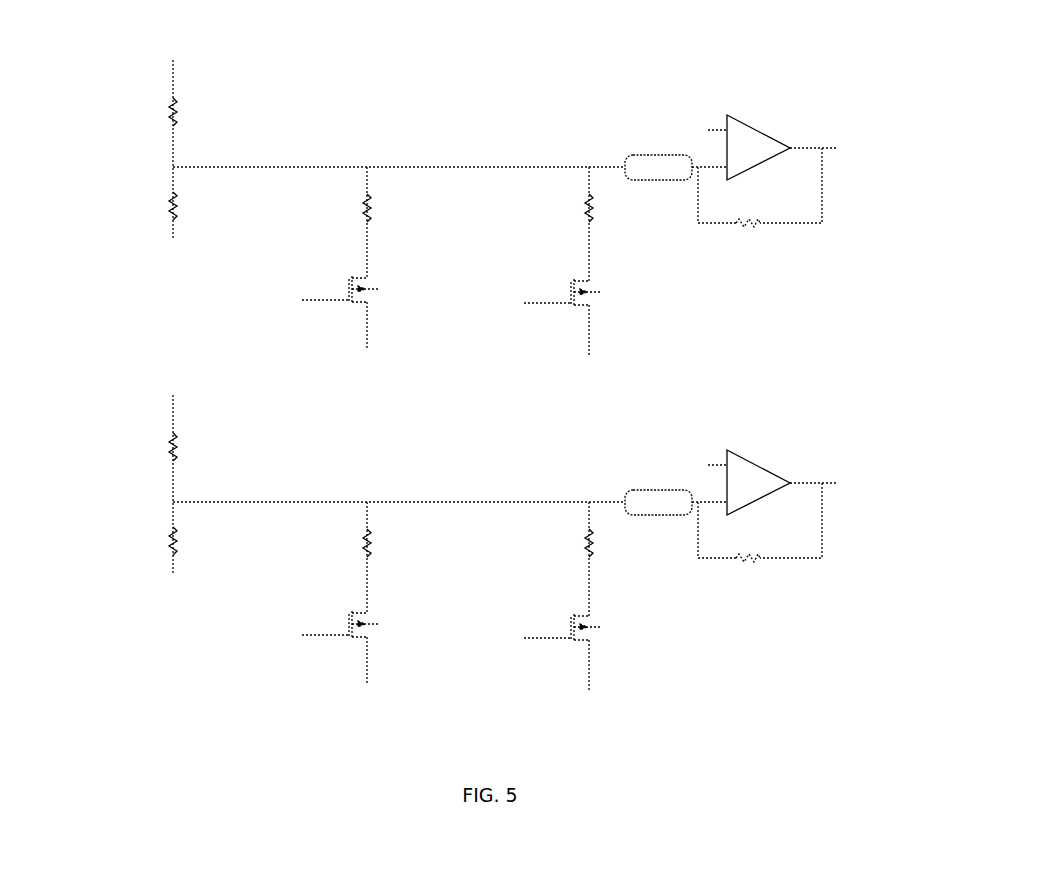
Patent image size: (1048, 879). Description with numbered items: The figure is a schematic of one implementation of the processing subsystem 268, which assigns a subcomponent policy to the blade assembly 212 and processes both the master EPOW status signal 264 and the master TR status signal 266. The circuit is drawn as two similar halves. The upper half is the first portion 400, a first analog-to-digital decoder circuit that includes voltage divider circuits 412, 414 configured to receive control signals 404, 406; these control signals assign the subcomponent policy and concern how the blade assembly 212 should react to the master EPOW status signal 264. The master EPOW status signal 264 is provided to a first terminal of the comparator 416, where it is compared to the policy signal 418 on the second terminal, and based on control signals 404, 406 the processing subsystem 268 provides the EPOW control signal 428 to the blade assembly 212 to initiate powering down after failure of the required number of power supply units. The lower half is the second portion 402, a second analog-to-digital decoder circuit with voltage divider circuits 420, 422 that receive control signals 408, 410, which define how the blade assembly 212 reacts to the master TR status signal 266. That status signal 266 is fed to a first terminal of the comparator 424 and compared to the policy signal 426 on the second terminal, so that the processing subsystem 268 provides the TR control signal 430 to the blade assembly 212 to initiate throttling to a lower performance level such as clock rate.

The first portion of processing subsystem 400 is at (118, 55).
The second portion of processing subsystem 402 is at (118, 397).
The processing subsystem 268 is at (521, 41).
The master EPOW status signal 264 is at (588, 131).
The master TR status signal 266 is at (602, 466).
The control signal 404 is at (507, 304).
The control signal 406 is at (287, 304).
The control signal 408 is at (507, 639).
The control signal 410 is at (287, 639).
The voltage divider circuit 412 is at (383, 246).
The voltage divider circuit 414 is at (609, 247).
The comparator 416 is at (772, 158).
The policy signal 418 is at (658, 167).
The voltage divider circuit 420 is at (380, 605).
The voltage divider circuit 422 is at (605, 607).
The comparator 424 is at (765, 491).
The policy signal 426 is at (658, 502).
The EPOW control signal 428 is at (881, 147).
The TR control signal 430 is at (881, 482).
The blade assembly 212 is at (871, 168).